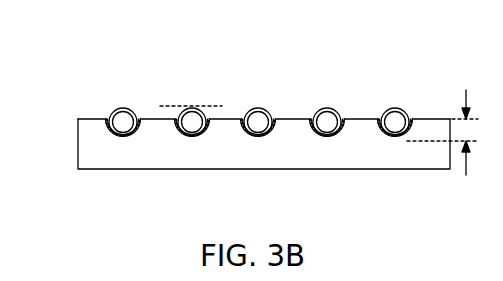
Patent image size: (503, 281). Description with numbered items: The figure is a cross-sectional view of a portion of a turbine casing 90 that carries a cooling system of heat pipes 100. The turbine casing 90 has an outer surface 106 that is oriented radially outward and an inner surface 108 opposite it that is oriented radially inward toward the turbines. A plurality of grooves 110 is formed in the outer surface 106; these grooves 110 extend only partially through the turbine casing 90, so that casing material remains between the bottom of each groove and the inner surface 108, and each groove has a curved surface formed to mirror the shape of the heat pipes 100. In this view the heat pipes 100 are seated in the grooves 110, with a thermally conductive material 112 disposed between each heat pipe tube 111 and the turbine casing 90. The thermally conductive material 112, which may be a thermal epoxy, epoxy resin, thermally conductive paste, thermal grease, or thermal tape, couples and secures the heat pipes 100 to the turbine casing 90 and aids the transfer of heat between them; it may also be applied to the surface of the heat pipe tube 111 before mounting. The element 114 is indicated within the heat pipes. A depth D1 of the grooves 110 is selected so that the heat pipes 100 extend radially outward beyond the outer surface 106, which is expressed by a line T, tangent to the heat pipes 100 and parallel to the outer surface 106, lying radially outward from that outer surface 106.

The turbine casing 90 is at (238, 156).
The heat pipes 100 is at (124, 102).
The outer surface 106 is at (88, 118).
The inner surface 108 is at (103, 170).
The grooves 110 is at (337, 128).
The heat pipe tube 111 is at (268, 113).
The thermally conductive material 112 is at (127, 138).
The conductive core / via 114 is at (123, 122).
The line tangent to heat pipes T is at (219, 105).
The depth of grooves D1 is at (442, 120).